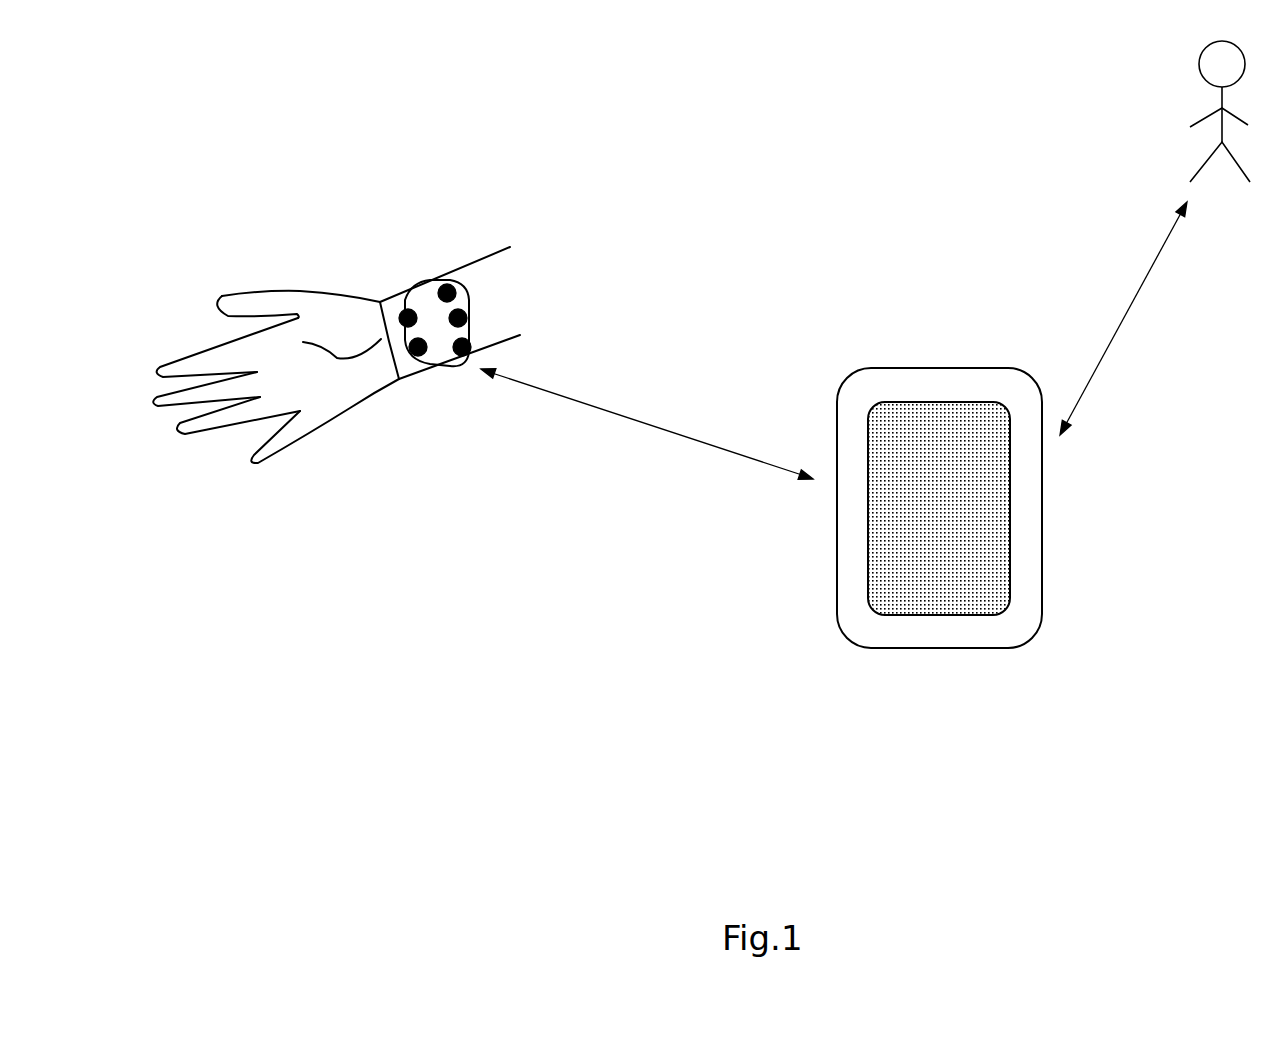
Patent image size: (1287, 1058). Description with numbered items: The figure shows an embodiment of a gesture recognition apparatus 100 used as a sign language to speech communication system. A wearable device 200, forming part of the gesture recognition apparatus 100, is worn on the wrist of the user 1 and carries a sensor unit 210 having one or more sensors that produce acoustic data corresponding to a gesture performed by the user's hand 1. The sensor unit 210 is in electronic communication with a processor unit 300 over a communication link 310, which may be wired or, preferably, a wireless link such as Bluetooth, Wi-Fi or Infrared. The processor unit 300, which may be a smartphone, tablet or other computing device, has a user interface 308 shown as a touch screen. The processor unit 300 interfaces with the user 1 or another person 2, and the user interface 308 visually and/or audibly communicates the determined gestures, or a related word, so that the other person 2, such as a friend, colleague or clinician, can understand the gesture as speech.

The user 1 is at (322, 369).
The other person 2 is at (1155, 238).
The gesture recognition apparatus 100 is at (453, 567).
The wearable device 200 is at (423, 232).
The sensor unit 210 is at (490, 300).
The processor unit 300 is at (1066, 655).
The user interface 308 is at (916, 468).
The communication link 310 is at (704, 462).